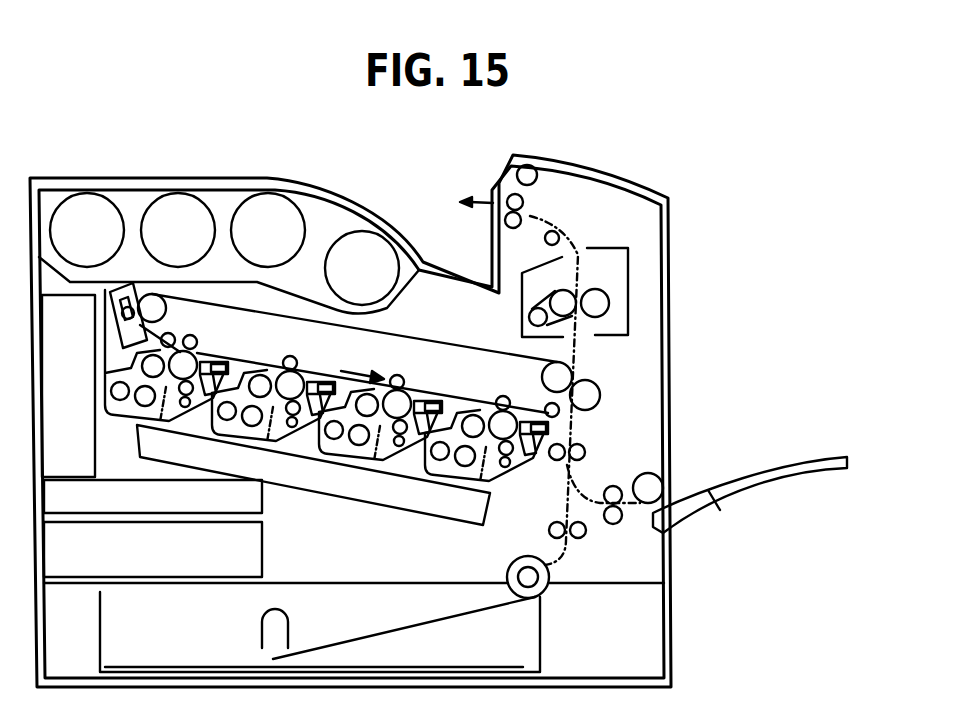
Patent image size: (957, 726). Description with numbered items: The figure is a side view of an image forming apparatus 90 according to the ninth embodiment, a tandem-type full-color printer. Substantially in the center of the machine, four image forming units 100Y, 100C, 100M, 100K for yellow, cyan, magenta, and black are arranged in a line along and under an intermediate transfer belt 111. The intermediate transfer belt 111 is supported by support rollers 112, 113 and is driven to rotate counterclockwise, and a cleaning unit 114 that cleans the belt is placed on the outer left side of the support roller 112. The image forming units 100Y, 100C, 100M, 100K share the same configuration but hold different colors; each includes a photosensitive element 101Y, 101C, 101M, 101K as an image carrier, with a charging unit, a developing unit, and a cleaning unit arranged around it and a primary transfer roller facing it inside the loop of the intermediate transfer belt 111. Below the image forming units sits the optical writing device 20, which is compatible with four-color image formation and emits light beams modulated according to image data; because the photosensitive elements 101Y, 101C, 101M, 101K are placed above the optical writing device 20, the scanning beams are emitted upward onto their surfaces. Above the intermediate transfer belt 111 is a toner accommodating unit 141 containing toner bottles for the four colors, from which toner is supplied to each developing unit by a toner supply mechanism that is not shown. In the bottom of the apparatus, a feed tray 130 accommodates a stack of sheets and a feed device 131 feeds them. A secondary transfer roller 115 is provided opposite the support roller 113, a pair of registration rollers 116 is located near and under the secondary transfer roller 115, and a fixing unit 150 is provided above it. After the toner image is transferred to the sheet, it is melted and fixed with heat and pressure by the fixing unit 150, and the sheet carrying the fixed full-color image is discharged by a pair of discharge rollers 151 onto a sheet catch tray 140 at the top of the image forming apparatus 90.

The image forming apparatus 90 is at (142, 158).
The toner accommodating unit 141 is at (231, 195).
The sheet catch tray 140 is at (340, 198).
The discharge rollers 151 is at (524, 204).
The fixing unit 150 is at (587, 248).
The intermediate transfer belt 111 is at (420, 322).
The support roller 112 is at (167, 306).
The cleaning unit 114 is at (110, 322).
The support roller 113 is at (543, 372).
The secondary transfer roller 115 is at (600, 391).
The registration rollers 116 is at (585, 447).
The image forming unit 100Y is at (153, 356).
The image forming unit 100C is at (242, 394).
The image forming unit 100M is at (345, 410).
The image forming unit 100K is at (452, 435).
The photosensitive element 101Y is at (237, 340).
The photosensitive element 101C is at (322, 358).
The photosensitive element 101M is at (418, 368).
The photosensitive element 101K is at (497, 412).
The optical writing device 20 is at (346, 500).
The feed tray 130 is at (542, 631).
The feed device 131 is at (507, 572).